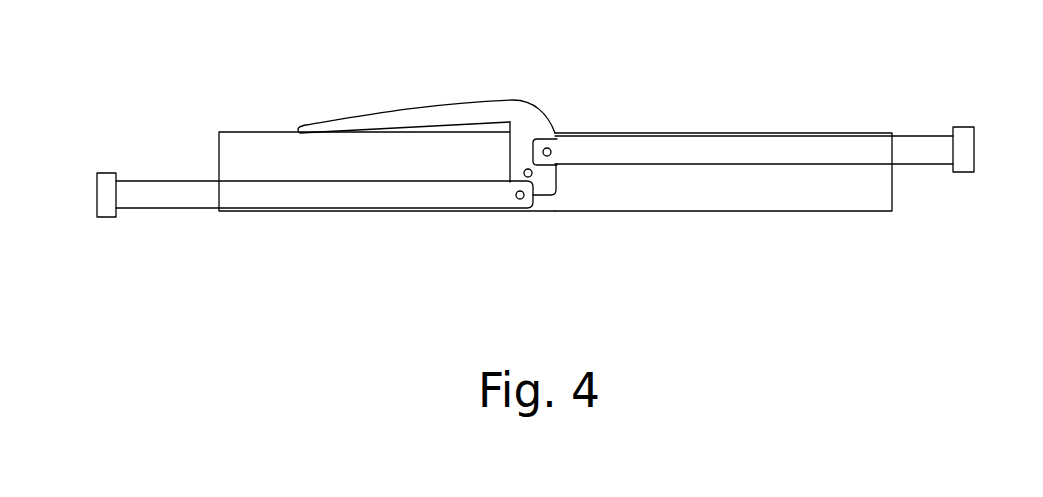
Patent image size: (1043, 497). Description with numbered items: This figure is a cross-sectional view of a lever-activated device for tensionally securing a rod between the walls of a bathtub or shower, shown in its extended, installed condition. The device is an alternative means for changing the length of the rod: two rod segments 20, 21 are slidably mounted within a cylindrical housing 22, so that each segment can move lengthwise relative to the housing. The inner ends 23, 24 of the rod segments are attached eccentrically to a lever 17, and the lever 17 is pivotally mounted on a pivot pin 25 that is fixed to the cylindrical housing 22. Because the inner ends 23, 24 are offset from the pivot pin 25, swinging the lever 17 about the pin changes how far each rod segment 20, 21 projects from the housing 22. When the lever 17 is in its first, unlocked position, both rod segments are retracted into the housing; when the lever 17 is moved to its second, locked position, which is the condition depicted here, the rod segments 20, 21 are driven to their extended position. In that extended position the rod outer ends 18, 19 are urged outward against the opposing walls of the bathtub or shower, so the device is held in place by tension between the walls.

The lever 17 is at (443, 113).
The rod outer end 18 is at (955, 149).
The rod outer end 19 is at (116, 193).
The rod segment 20 is at (927, 148).
The rod segment 21 is at (195, 193).
The cylindrical housing 22 is at (808, 212).
The inner end 23 is at (503, 200).
The inner end 24 is at (563, 150).
The pivot pin 25 is at (532, 177).